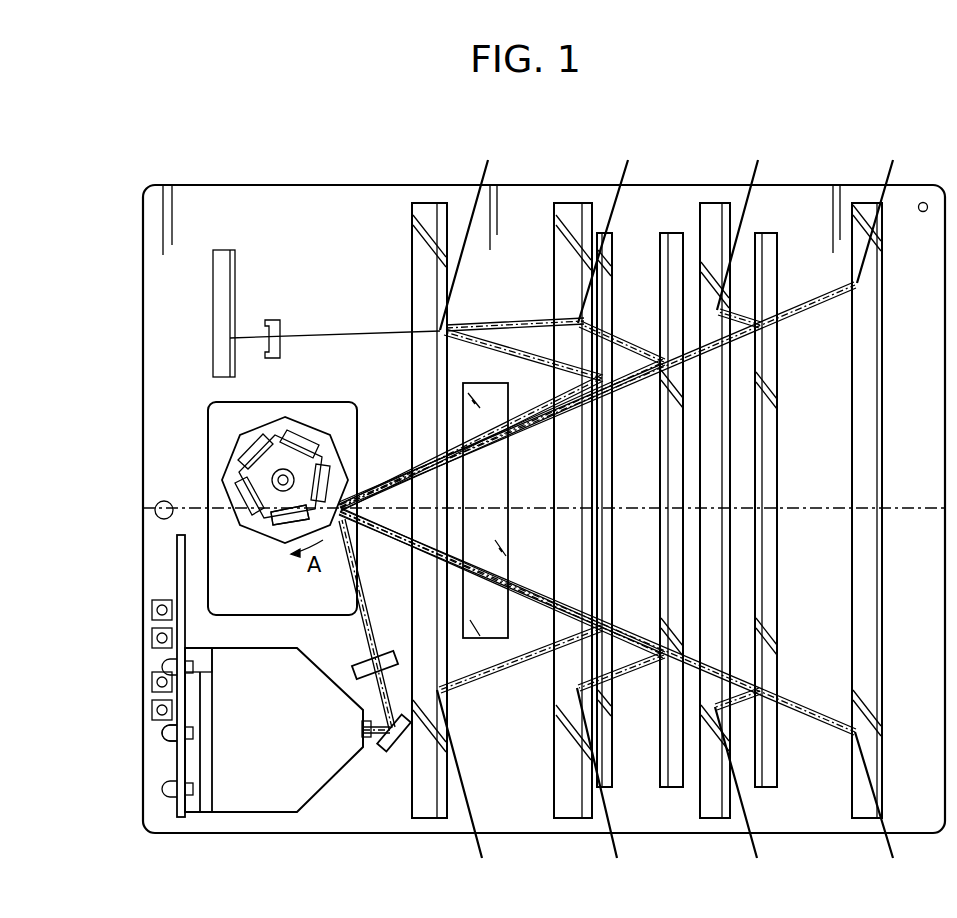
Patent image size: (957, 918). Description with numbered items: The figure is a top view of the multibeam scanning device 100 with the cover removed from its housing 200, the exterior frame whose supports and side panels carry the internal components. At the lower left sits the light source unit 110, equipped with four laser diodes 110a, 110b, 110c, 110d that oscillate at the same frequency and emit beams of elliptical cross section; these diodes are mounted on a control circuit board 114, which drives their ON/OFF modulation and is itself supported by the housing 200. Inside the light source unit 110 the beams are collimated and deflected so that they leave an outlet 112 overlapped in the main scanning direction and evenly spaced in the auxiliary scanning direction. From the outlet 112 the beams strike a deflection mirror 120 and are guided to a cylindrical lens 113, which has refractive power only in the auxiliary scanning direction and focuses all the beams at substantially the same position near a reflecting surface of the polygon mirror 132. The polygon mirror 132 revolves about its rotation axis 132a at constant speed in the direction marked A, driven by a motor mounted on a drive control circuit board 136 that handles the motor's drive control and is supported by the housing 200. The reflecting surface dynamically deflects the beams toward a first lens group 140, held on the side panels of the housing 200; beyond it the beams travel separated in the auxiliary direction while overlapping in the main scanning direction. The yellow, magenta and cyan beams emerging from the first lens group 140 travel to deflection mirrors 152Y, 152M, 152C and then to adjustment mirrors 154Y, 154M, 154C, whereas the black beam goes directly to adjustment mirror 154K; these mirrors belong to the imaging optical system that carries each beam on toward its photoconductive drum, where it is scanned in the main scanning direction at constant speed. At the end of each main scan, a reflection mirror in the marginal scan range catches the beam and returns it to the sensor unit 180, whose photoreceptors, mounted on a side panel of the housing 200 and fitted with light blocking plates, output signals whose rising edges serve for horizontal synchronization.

The multibeam scanning device 100 is at (152, 168).
The housing 200 is at (140, 286).
The light source unit 110 is at (322, 795).
The laser diode 110a is at (175, 789).
The laser diode 110b is at (180, 733).
The laser diode 110d is at (169, 733).
The laser diode 110c is at (178, 668).
The outlet 112 is at (358, 712).
The cylindrical lens 113 is at (387, 655).
The control circuit board 114 is at (177, 545).
The deflection mirror 120 is at (384, 750).
The polygon mirror 132 is at (320, 418).
The rotation axis 132a is at (278, 490).
The drive control circuit board 136 is at (208, 457).
The first lens group 140 is at (498, 508).
The deflection mirror 152Y is at (608, 250).
The deflection mirror 152M is at (676, 238).
The deflection mirror 152C is at (768, 252).
The adjustment mirror 154Y is at (427, 205).
The adjustment mirror 154M is at (573, 205).
The adjustment mirror 154C is at (712, 212).
The adjustment mirror 154K is at (870, 212).
The sensor unit 180 is at (252, 285).